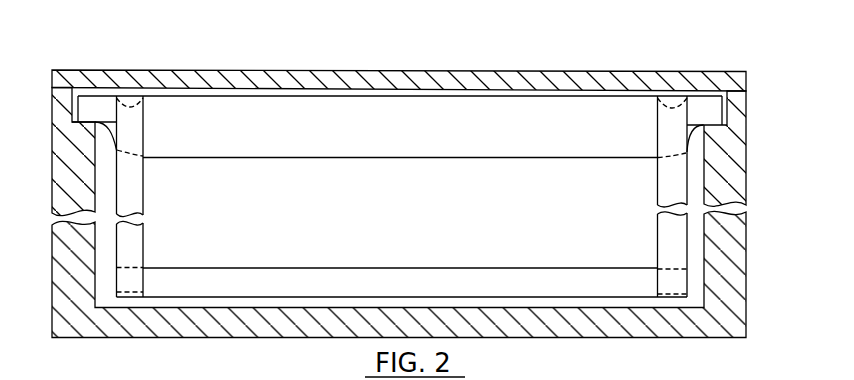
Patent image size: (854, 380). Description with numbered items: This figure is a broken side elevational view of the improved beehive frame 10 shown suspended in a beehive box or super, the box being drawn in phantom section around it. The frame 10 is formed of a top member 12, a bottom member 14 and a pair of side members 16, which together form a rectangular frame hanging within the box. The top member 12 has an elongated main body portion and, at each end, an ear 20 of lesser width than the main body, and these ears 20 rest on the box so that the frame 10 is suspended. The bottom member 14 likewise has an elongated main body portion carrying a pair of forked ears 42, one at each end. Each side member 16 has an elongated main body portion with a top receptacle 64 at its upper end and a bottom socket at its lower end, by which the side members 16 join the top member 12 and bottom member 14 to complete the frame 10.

The beehive frame 10 is at (340, 214).
The top member 12 is at (458, 158).
The bottom member 14 is at (458, 268).
The side members 16 is at (143, 178).
The ears 20 is at (702, 97).
The forked ears 42 is at (672, 282).
The top receptacle 64 is at (670, 133).